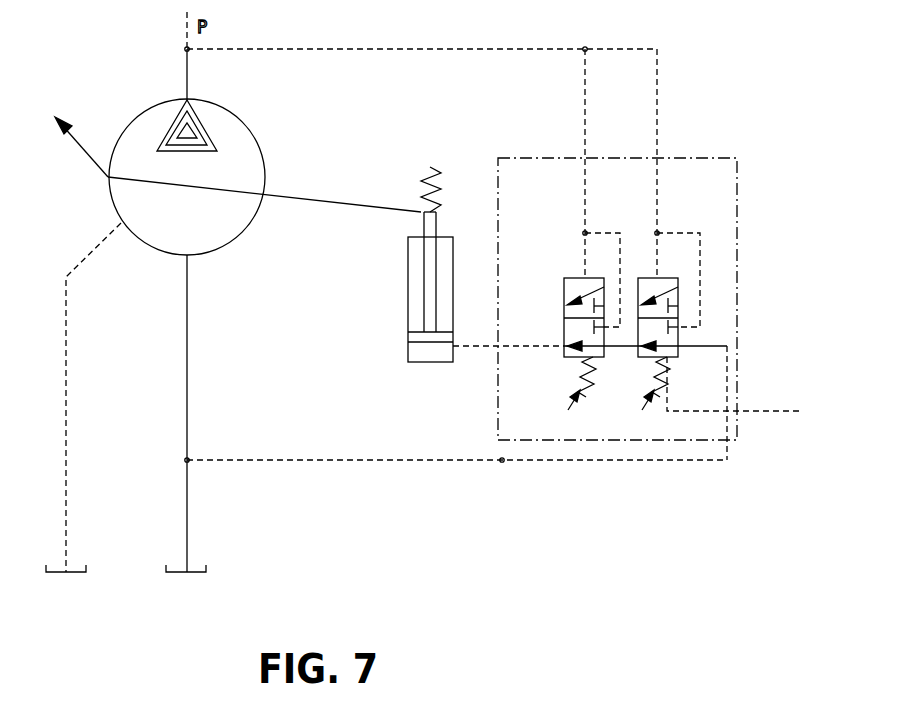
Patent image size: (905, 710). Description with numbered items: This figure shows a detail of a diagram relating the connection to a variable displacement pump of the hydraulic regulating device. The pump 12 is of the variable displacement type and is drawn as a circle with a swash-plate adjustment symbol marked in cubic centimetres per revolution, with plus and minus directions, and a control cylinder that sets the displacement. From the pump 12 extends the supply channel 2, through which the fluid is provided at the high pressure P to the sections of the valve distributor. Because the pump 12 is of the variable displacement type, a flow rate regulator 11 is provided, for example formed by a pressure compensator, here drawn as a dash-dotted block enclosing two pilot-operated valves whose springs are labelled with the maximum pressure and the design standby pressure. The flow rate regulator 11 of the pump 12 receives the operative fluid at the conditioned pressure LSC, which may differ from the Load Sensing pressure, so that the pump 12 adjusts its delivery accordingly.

The supply channel 2 is at (233, 292).
The pump 12 is at (80, 124).
The flow rate regulator 11 is at (653, 283).